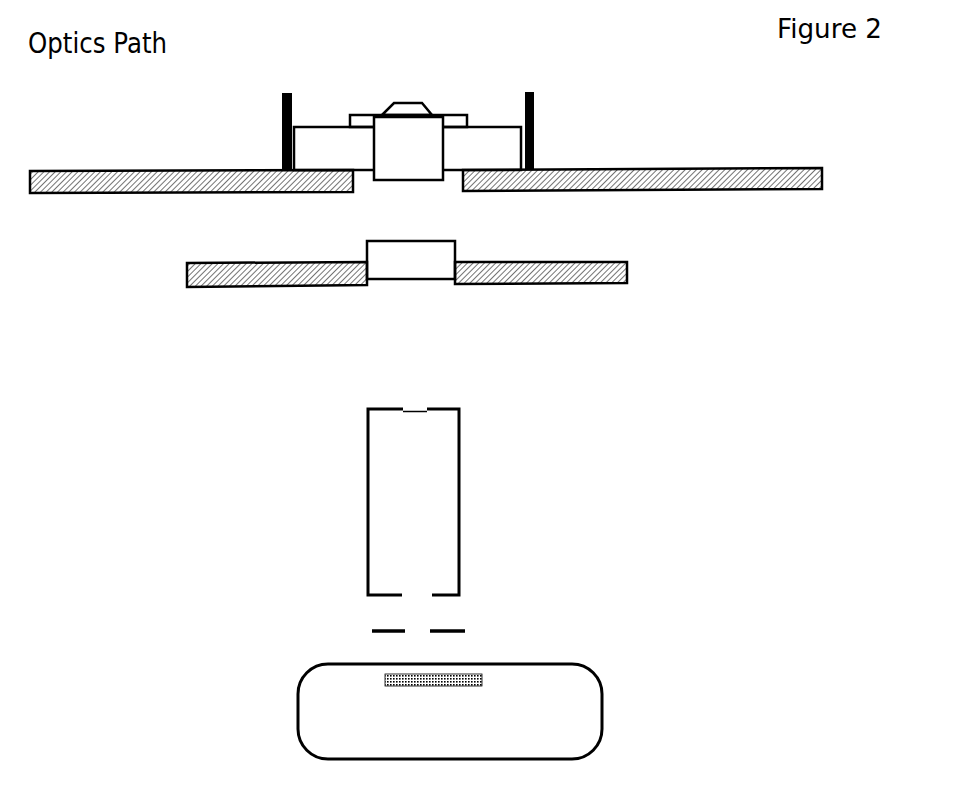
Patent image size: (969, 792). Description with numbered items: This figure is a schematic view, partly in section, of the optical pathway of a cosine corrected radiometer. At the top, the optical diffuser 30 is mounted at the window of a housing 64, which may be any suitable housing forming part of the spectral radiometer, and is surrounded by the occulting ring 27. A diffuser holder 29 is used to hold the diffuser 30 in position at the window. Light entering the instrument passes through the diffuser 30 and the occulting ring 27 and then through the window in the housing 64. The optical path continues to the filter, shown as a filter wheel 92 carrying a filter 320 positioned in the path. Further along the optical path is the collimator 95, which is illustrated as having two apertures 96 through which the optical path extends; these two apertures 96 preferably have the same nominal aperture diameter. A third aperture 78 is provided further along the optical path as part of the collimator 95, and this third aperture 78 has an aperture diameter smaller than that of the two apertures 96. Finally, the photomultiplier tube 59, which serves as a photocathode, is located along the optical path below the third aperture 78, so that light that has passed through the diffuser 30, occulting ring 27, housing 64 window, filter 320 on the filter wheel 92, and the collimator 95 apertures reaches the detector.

The occulting ring 27 is at (537, 107).
The diffuser holder 29 is at (493, 125).
The optical diffuser 30 is at (432, 104).
The housing 64 is at (683, 163).
The filter 320 is at (457, 245).
The filter wheel 92 is at (627, 273).
The collimator 95 is at (460, 472).
The apertures 96 is at (415, 408).
The third aperture 78 is at (418, 630).
The photomultiplier tube 59 is at (603, 703).